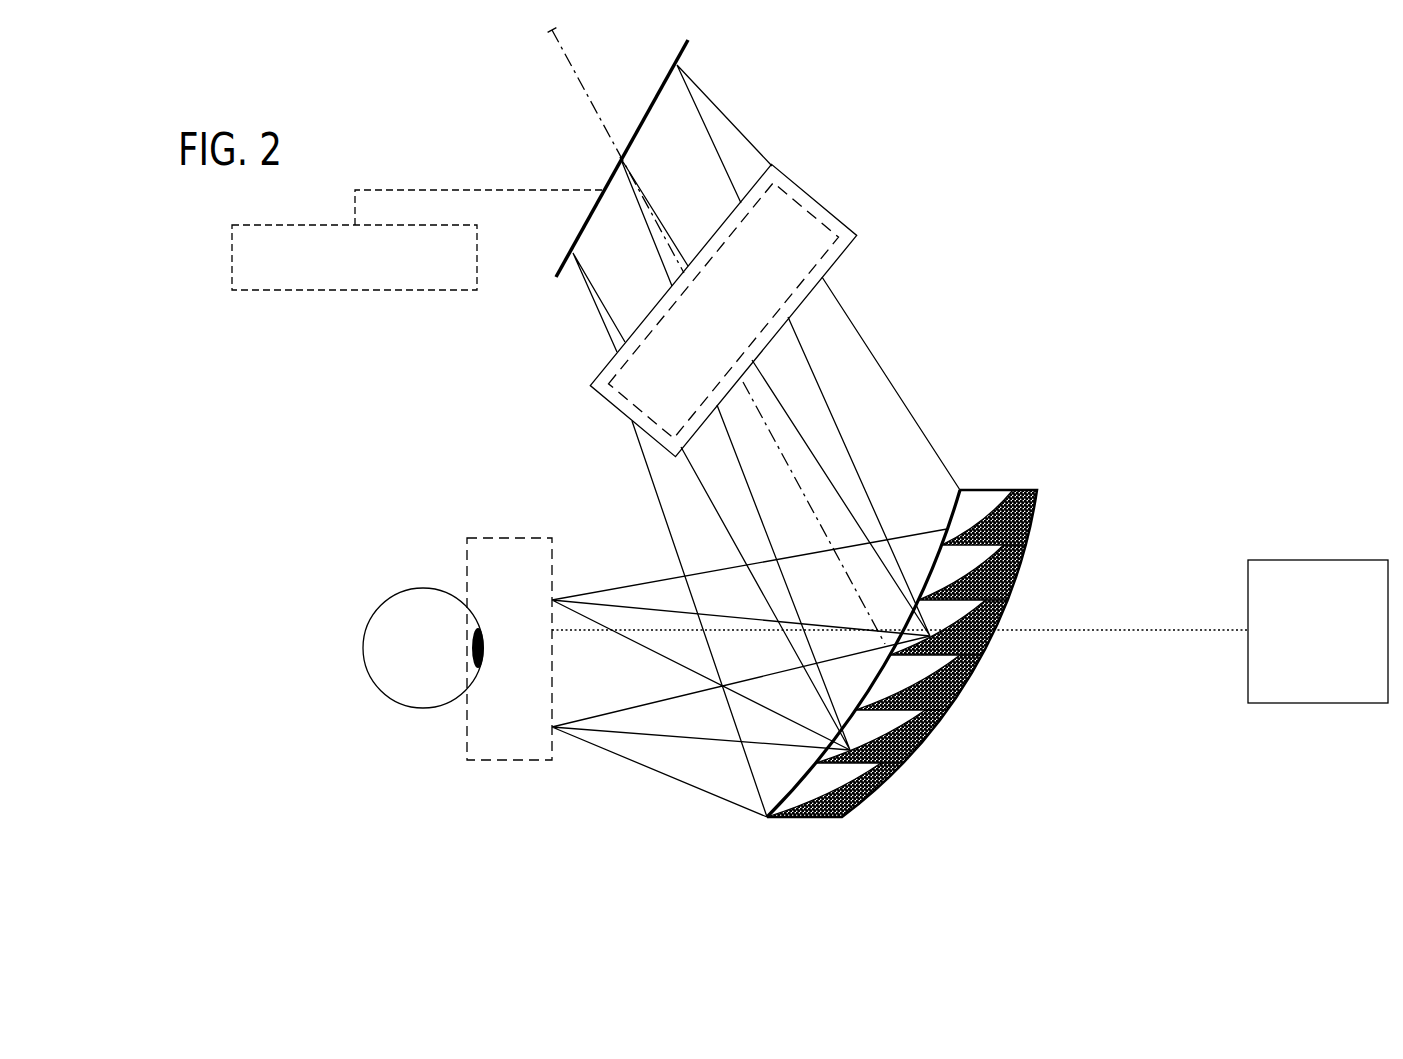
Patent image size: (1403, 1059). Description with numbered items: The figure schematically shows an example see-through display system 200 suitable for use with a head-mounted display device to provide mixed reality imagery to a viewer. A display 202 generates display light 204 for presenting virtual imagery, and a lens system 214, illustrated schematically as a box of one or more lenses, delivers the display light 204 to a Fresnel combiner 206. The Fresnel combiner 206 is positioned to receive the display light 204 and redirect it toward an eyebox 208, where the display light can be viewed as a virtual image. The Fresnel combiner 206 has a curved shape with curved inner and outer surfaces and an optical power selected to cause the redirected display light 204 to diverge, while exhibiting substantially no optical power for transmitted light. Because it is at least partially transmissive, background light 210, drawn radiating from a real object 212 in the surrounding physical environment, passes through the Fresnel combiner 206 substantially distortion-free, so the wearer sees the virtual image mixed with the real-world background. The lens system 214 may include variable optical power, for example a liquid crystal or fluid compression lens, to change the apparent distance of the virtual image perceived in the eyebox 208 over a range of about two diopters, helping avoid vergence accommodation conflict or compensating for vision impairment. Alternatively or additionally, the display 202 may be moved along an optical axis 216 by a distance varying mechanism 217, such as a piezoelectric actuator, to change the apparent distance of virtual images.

The see-through display system 200 is at (1186, 332).
The display 202 is at (556, 277).
The display light 204 is at (728, 138).
The Fresnel combiner 206 is at (999, 490).
The eyebox 208 is at (502, 538).
The background light 210 is at (1068, 628).
The real object 212 is at (1318, 631).
The lens system 214 is at (810, 195).
The optical axis 216 is at (552, 30).
The distance varying mechanism 217 is at (232, 289).